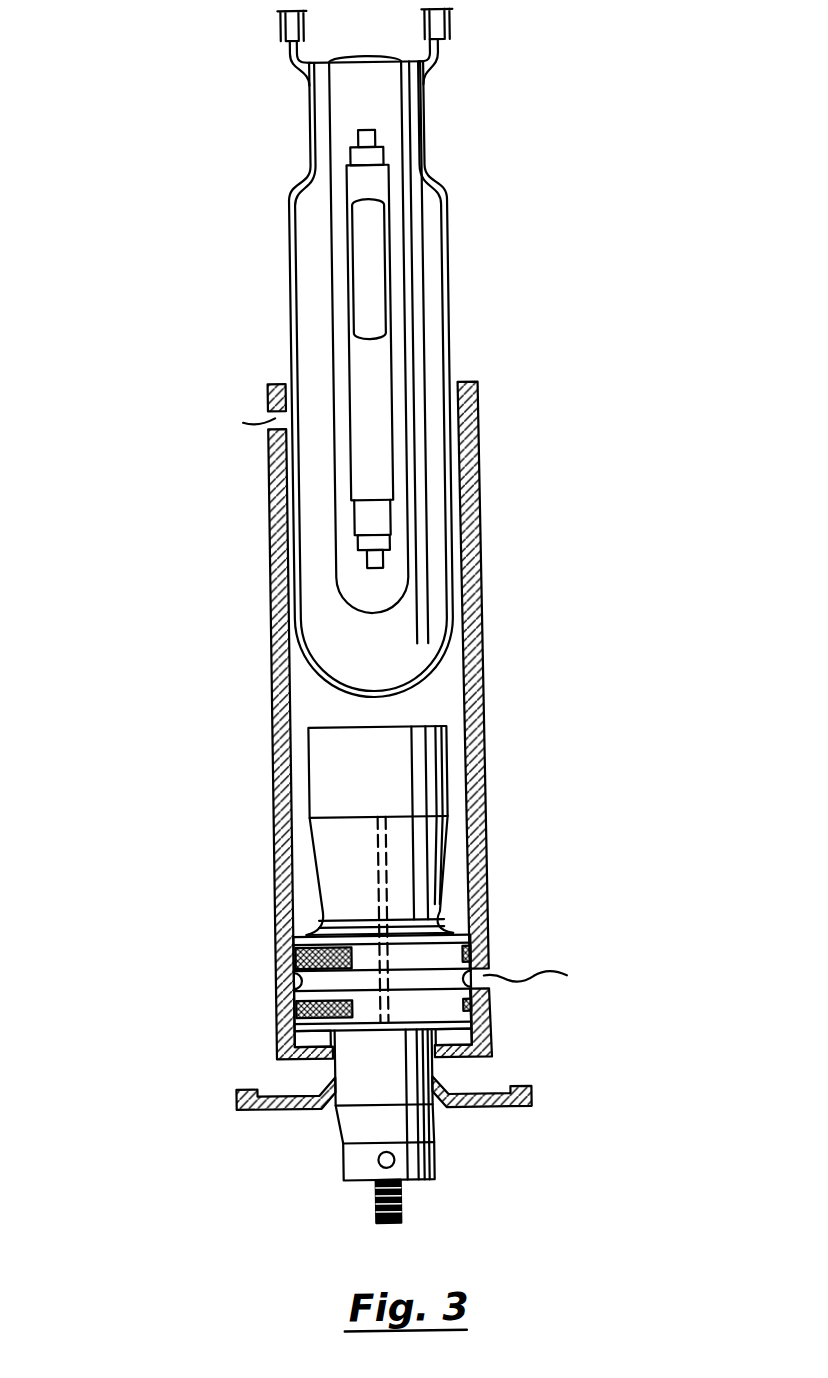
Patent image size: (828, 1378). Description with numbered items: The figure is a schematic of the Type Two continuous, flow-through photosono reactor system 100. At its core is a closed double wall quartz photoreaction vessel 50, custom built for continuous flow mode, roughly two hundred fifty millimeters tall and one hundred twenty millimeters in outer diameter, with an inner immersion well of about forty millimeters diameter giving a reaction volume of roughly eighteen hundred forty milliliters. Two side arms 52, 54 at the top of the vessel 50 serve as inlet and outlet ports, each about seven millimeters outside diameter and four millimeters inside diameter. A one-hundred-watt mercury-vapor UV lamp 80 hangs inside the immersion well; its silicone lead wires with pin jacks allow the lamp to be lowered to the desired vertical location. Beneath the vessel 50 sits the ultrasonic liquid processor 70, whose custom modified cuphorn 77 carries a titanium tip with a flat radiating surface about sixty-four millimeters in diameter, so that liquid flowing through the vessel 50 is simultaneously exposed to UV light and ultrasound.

The flow-through reactor system 100 is at (523, 402).
The double wall quartz photoreaction vessel 50 is at (454, 212).
The left inlet/outlet port 52 is at (299, 58).
The right inlet/outlet port 54 is at (447, 58).
The UV lamp 80 is at (378, 362).
The cuphorn 77 is at (396, 788).
The ultrasonic liquid processor 70 is at (409, 1118).